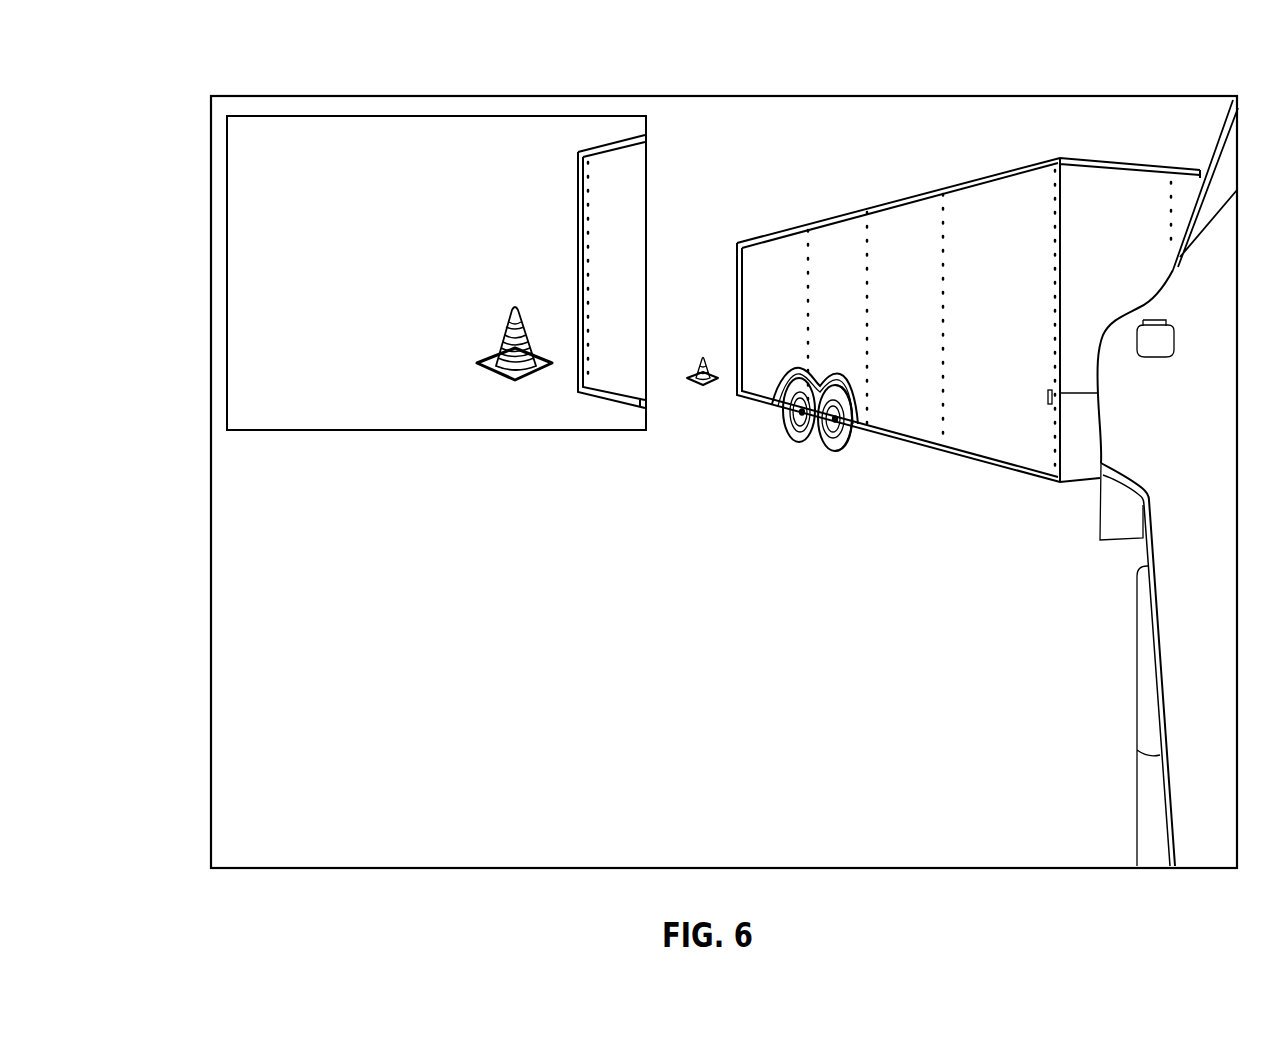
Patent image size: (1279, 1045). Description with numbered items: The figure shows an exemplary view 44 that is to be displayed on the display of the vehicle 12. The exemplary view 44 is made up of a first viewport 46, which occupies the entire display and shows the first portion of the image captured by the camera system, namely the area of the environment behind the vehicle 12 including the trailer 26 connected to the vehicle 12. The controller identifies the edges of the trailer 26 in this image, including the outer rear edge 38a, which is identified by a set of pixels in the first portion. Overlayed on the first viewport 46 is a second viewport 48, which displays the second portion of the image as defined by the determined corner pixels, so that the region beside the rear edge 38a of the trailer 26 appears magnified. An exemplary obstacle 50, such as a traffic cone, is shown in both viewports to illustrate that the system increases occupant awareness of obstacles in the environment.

The vehicle 12 is at (1207, 451).
The trailer 26 is at (636, 279).
The rear edge 38a is at (577, 215).
The exemplary view 44 is at (197, 222).
The first viewport 46 is at (377, 95).
The second viewport 48 is at (373, 430).
The exemplary obstacle 50 is at (502, 328).